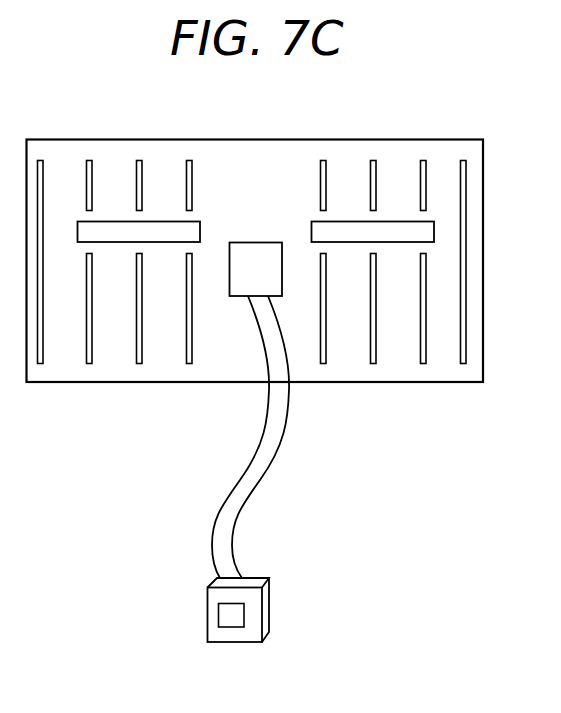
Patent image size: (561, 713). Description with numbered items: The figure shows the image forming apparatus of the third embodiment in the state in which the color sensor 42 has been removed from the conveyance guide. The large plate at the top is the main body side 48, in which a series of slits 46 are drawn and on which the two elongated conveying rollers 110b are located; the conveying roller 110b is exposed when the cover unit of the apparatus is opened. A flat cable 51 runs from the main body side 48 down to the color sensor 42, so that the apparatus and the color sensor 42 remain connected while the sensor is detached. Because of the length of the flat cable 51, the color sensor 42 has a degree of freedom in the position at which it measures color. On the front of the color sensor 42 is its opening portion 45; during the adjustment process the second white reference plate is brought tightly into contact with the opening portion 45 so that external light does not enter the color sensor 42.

The main body side 48 is at (347, 163).
The slit 46 is at (193, 327).
The conveying roller 110b is at (346, 221).
The flat cable 51 is at (268, 430).
The color sensor 42 is at (253, 577).
The opening portion 45 is at (218, 617).